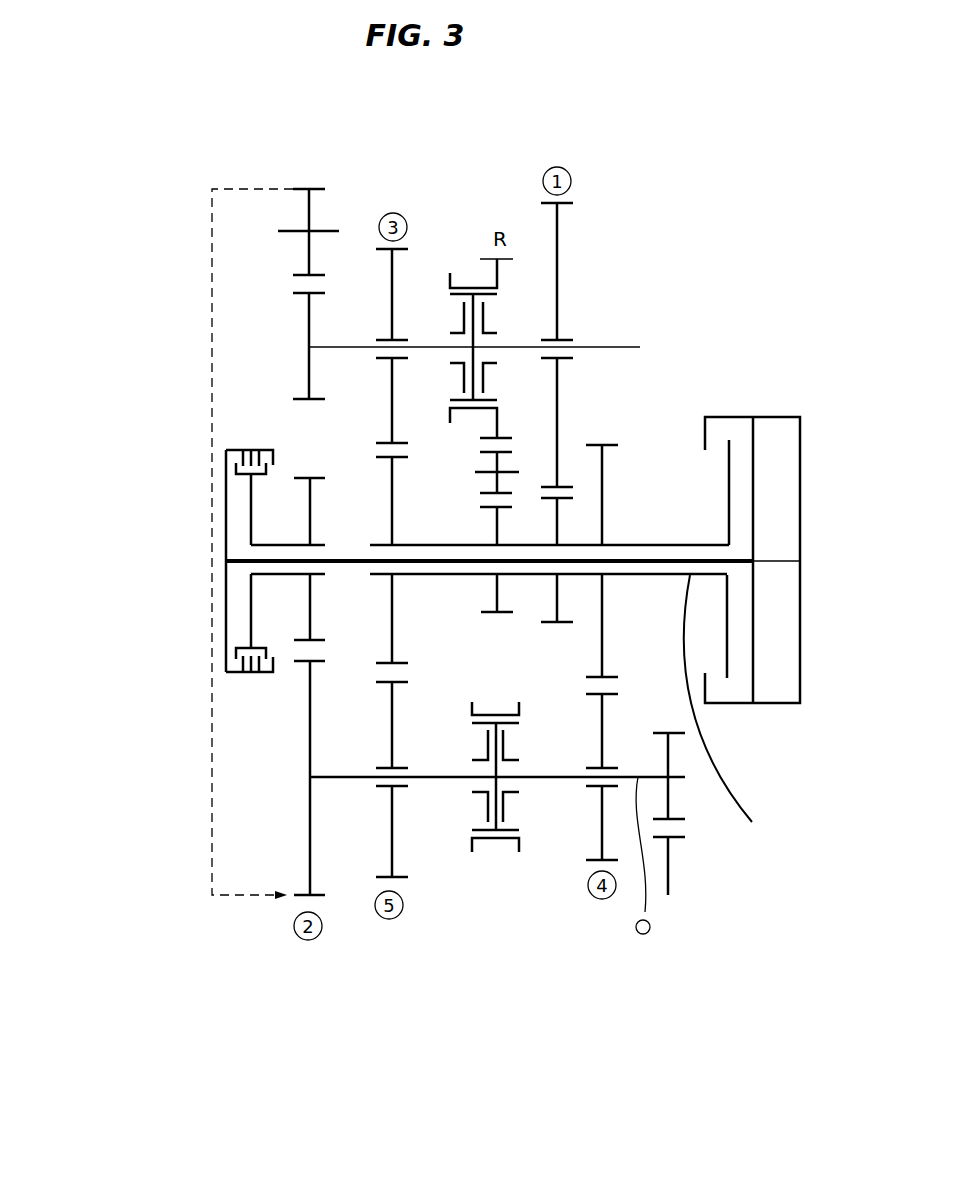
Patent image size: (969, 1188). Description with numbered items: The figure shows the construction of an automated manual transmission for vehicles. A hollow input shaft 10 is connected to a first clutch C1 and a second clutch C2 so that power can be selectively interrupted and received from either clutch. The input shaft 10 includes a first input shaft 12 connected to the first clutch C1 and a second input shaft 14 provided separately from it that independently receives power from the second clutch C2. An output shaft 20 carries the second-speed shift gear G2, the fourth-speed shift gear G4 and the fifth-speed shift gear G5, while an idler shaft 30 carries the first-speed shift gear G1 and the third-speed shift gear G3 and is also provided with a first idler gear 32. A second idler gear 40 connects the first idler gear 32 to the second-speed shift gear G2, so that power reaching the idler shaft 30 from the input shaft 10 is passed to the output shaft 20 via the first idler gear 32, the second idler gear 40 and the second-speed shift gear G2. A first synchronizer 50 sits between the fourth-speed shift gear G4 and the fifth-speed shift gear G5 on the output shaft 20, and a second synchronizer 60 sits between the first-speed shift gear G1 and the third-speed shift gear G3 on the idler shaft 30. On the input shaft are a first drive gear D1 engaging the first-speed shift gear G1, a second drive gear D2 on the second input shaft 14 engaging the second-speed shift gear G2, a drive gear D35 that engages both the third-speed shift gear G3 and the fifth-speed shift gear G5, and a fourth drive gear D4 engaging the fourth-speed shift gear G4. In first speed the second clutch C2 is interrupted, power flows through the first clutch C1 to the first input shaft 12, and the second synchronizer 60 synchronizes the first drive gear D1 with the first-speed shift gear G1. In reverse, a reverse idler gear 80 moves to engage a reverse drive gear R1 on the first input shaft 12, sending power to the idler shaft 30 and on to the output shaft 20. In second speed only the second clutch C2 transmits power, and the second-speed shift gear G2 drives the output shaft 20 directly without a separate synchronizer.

The second idler gear 40 is at (283, 209).
The first idler gear 32 is at (309, 330).
The idler shaft 30 is at (648, 335).
The third-speed shift gear G3 is at (392, 282).
The third drive gear D35 is at (392, 515).
The fifth-speed shift gear G5 is at (392, 832).
The second-speed shift gear G2 is at (308, 823).
The second drive gear D2 is at (310, 617).
The second input shaft 14 is at (273, 577).
The second clutch C2 is at (197, 449).
The second synchronizer 60 is at (425, 290).
The reverse idler gear 80 is at (512, 452).
The first-speed shift gear G1 is at (558, 242).
The first drive gear D1 is at (555, 597).
The reverse drive gear R1 is at (497, 587).
The fourth drive gear D4 is at (602, 617).
The fourth-speed shift gear G4 is at (602, 822).
The first synchronizer 50 is at (464, 795).
The first input shaft 12 is at (660, 577).
The first clutch C1 is at (692, 483).
The input shaft 10 is at (737, 722).
The output shaft 20 is at (657, 858).